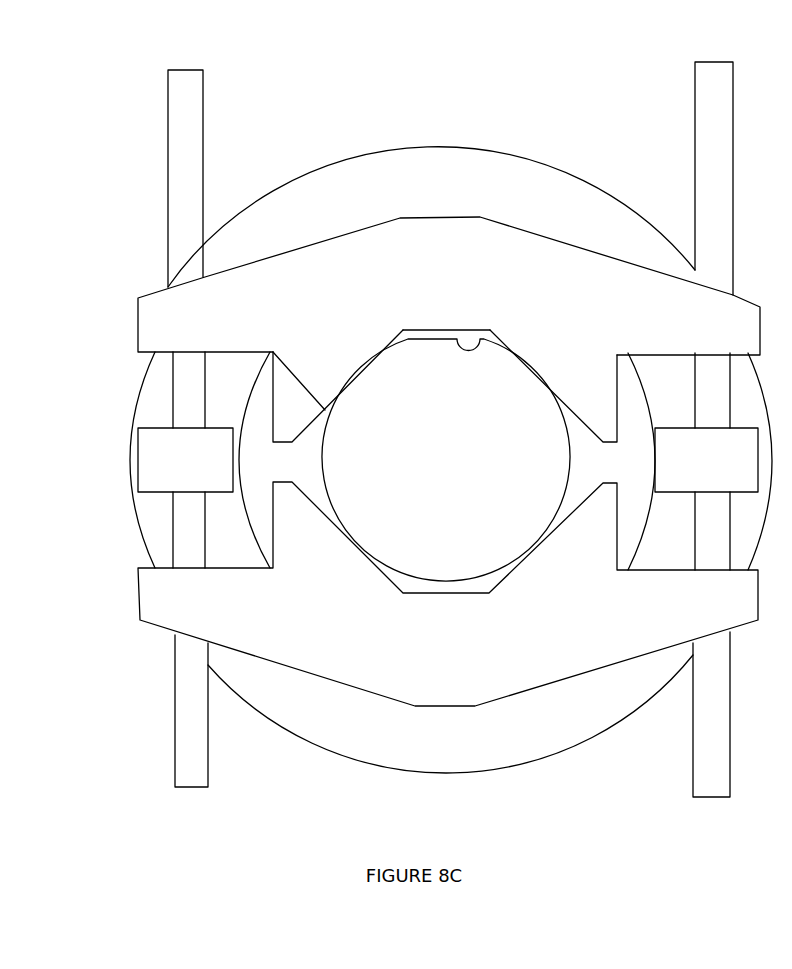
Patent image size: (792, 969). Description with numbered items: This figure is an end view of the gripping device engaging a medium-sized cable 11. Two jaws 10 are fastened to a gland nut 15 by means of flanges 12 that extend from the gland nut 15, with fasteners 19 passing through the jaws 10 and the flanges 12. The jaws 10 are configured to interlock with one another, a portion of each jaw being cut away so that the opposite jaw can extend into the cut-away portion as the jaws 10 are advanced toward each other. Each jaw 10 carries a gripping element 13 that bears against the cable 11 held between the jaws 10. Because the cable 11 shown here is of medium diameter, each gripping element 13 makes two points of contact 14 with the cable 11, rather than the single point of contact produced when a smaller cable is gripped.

The jaw 10 is at (273, 637).
The cable 11 is at (403, 545).
The flange 12 is at (157, 460).
The gripping element 13 is at (487, 333).
The point of contact 14 is at (365, 367).
The gland nut 15 is at (597, 707).
The fastener 19 is at (188, 685).